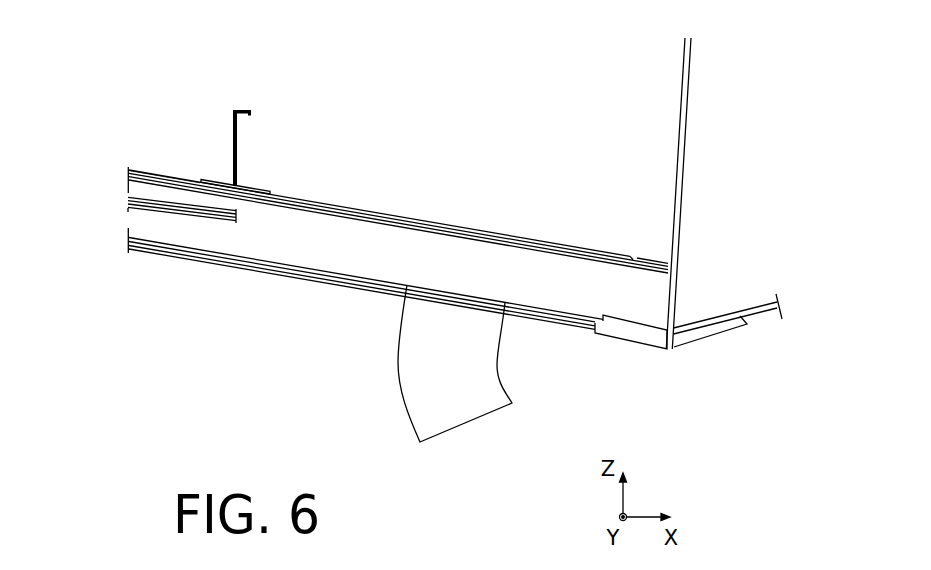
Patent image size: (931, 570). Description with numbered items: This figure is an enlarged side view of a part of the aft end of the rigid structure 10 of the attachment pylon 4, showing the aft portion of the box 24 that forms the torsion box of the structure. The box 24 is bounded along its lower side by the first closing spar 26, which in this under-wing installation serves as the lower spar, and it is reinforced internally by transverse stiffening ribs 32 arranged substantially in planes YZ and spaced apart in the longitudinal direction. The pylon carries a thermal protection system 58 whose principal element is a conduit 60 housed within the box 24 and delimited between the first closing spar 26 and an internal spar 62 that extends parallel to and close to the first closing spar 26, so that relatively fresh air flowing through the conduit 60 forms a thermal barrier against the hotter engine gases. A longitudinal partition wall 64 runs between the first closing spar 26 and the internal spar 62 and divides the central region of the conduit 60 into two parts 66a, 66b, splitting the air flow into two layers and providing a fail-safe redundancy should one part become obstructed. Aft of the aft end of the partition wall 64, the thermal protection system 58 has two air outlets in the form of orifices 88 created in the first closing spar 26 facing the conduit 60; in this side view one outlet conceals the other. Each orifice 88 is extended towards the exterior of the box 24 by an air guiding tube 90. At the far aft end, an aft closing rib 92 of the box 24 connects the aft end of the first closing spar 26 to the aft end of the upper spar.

The attachment pylon 4 is at (711, 373).
The rigid structure 10 is at (640, 395).
The box 24 is at (222, 265).
The first closing spar 26 is at (307, 276).
The transverse stiffening rib 32 is at (232, 142).
The thermal protection system 58 is at (350, 170).
The conduit 60 is at (592, 275).
The internal spar 62 is at (407, 216).
The longitudinal partition wall 64 is at (239, 221).
The first part of the conduit 66a is at (147, 226).
The second part of the conduit 66b is at (139, 187).
The orifice 88 is at (458, 300).
The air guiding tube 90 is at (397, 360).
The aft closing rib 92 is at (684, 98).